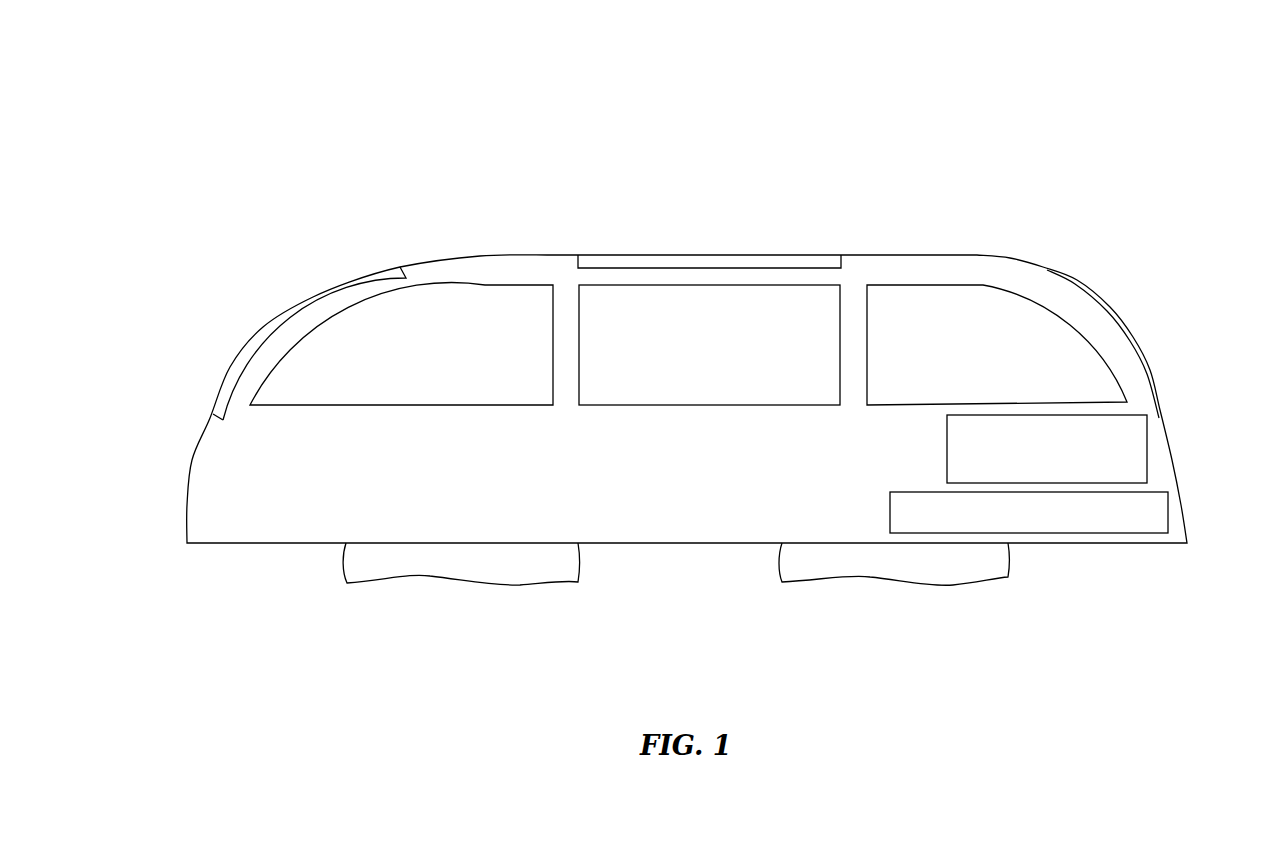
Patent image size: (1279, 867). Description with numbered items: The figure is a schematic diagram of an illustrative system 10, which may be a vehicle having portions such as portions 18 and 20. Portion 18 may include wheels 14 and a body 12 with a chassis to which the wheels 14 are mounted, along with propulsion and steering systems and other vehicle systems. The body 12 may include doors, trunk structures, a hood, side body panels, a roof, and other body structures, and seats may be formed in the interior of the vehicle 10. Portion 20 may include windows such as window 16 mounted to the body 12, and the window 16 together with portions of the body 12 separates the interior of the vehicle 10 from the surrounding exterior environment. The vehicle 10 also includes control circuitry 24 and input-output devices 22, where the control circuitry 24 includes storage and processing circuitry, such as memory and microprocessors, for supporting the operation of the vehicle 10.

The system 10 is at (973, 106).
The body 12 is at (652, 531).
The wheels 14 is at (463, 568).
The window 16 is at (398, 265).
The portion 18 is at (172, 527).
The portion 20 is at (1143, 302).
The input-output devices 22 is at (1147, 447).
The control circuitry 24 is at (1168, 513).